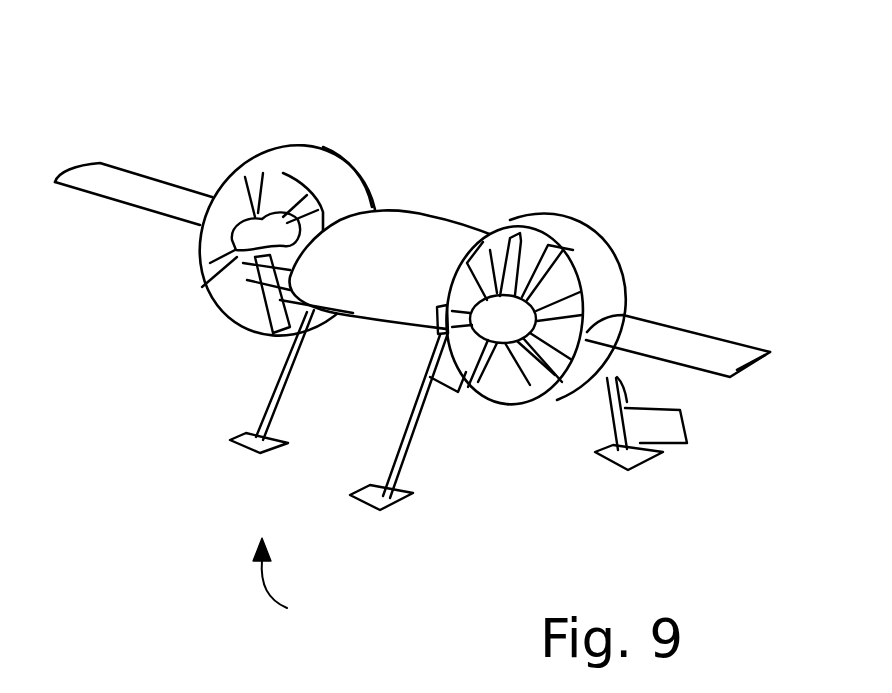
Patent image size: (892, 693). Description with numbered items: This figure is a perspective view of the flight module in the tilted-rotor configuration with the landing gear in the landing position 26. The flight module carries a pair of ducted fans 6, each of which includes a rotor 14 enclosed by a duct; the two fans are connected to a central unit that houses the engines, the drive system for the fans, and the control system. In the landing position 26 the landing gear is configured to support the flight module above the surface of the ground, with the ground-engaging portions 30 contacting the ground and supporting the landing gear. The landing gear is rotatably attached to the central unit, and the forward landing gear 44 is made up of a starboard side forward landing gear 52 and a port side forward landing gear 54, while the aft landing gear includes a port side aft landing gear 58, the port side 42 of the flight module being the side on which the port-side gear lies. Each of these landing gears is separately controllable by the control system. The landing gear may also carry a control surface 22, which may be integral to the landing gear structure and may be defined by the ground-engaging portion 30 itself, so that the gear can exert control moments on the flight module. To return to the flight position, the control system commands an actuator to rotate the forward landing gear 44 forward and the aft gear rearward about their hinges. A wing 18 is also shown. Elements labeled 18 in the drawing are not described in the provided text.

The ducted fan 6 is at (305, 157).
The wing 18 is at (163, 190).
The rotor 14 is at (262, 277).
The forward landing gear 44 is at (368, 207).
The port side 42 is at (495, 230).
The port side forward landing gear 54 is at (283, 360).
The ground-engaging portion 30 is at (245, 448).
The starboard side forward landing gear 52 is at (413, 408).
The port side aft landing gear 58 is at (612, 380).
The control surface 22 is at (663, 425).
The landing position 26 is at (291, 589).